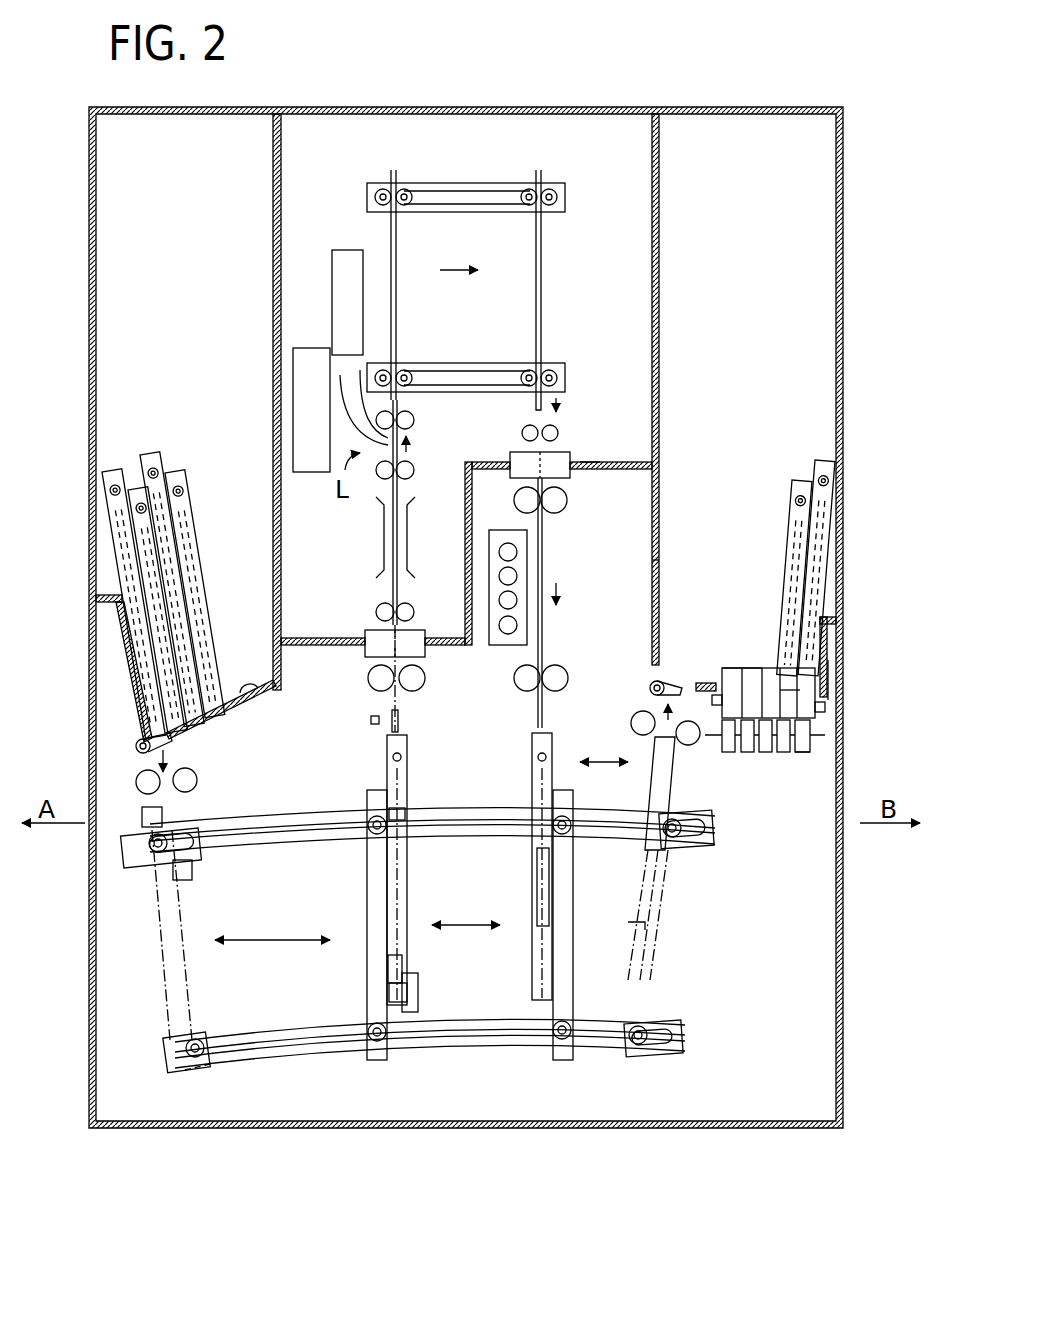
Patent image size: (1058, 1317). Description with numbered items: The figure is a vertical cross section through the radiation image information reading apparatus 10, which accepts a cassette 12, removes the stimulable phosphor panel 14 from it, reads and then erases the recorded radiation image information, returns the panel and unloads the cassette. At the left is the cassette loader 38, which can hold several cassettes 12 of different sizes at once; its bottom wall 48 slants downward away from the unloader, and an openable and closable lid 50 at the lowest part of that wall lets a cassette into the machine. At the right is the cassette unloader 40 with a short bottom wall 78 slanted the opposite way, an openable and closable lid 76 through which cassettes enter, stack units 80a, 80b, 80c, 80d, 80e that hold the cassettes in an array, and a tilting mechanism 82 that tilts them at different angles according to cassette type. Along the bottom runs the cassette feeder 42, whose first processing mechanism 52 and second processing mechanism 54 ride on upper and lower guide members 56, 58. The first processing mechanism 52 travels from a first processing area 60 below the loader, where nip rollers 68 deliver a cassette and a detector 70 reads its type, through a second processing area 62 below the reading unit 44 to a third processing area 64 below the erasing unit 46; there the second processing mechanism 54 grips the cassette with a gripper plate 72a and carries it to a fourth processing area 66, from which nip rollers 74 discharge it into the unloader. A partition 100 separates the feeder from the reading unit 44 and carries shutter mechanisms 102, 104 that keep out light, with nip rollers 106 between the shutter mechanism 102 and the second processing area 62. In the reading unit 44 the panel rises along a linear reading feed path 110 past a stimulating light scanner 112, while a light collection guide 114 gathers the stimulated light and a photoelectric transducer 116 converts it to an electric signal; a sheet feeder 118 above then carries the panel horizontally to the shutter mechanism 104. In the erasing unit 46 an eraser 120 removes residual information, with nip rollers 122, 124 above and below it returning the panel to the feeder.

The radiation image information reading apparatus 10 is at (767, 80).
The cassette 12 is at (130, 478).
The stimulable phosphor panel 14 is at (90, 528).
The cassette loader 38 is at (132, 733).
The cassette unloader 40 is at (830, 612).
The cassette feeder 42 is at (510, 1075).
The reading unit 44 is at (305, 292).
The erasing unit 46 is at (612, 572).
The bottom wall 48 is at (258, 690).
The openable and closable lid 50 is at (160, 748).
The first processing mechanism 52 is at (368, 880).
The second processing mechanism 54 is at (566, 895).
The upper guide member 56 is at (312, 816).
The lower guide member 58 is at (296, 1048).
The first processing area 60 is at (165, 972).
The second processing area 62 is at (312, 968).
The third processing area 64 is at (525, 975).
The fourth processing area 66 is at (692, 948).
The nip rollers 68 is at (196, 782).
The detector 70 is at (402, 966).
The gripper plate 72a is at (540, 892).
The nip rollers 74 is at (632, 722).
The openable and closable lid 76 is at (664, 684).
The short bottom wall 78 is at (706, 682).
The stack unit 80a is at (800, 686).
The stack unit 80b is at (790, 702).
The stack unit 80c is at (752, 725).
The stack unit 80d is at (752, 668).
The stack unit 80e is at (730, 668).
The tilting mechanism 82 is at (782, 755).
The partition 100 is at (600, 470).
The shutter mechanism 102 is at (378, 638).
The shutter mechanism 104 is at (552, 452).
The nip rollers 106 is at (418, 686).
The linear reading feed path 110 is at (404, 492).
The stimulating light scanner 112 is at (318, 358).
The light collection guide 114 is at (358, 390).
The photoelectric transducer 116 is at (346, 256).
The sheet feeder 118 is at (500, 252).
The eraser 120 is at (506, 552).
The nip rollers 122 is at (560, 508).
The nip rollers 124 is at (560, 678).